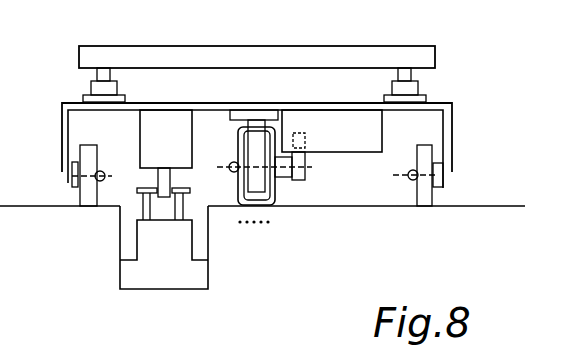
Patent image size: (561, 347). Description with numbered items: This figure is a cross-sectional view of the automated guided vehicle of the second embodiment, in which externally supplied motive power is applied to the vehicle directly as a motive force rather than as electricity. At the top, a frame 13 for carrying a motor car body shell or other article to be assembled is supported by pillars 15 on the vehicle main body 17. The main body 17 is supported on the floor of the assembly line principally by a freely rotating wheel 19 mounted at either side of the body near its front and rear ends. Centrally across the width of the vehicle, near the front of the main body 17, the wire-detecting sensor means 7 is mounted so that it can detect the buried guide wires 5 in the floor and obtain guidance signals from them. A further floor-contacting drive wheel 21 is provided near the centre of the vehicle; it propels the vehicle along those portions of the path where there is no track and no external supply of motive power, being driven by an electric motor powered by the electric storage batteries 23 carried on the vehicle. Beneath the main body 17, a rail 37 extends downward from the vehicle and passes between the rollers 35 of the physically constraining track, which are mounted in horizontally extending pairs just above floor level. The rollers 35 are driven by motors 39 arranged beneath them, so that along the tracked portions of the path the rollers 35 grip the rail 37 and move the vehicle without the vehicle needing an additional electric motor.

The frame 13 is at (357, 48).
The pillars 15 is at (413, 73).
The main body 17 is at (452, 125).
The freely rotating wheel 19 is at (433, 198).
The rail 37 is at (152, 186).
The rollers 35 is at (140, 188).
The motors 39 is at (140, 274).
The drive wheel 21 is at (238, 190).
The wire-detecting sensor means 7 is at (265, 191).
The electric storage batteries 23 is at (357, 145).
The wires 5 is at (259, 228).